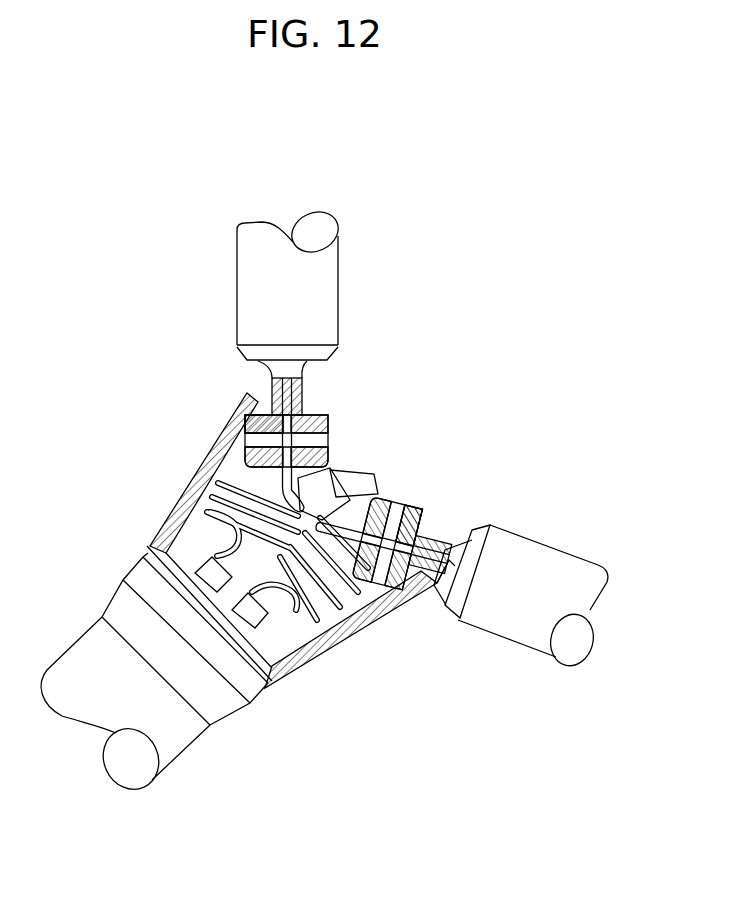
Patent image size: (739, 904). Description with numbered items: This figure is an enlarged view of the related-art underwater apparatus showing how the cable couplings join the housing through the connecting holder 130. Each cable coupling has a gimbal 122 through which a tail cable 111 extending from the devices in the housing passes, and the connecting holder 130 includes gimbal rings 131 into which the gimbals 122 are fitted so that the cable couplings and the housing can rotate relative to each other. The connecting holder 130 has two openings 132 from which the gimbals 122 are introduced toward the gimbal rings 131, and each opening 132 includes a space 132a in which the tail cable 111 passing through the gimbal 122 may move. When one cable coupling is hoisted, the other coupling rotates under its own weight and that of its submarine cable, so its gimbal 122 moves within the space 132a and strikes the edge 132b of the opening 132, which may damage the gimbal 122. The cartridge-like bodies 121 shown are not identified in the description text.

The tail cable 111 is at (213, 530).
The fluid cartridge 121 is at (330, 283).
The gimbal 122 is at (258, 392).
The connecting holder 130 is at (166, 489).
The gimbal ring 131 is at (248, 455).
The opening 132 is at (373, 478).
The space 132a is at (330, 420).
The edge 132b is at (445, 585).